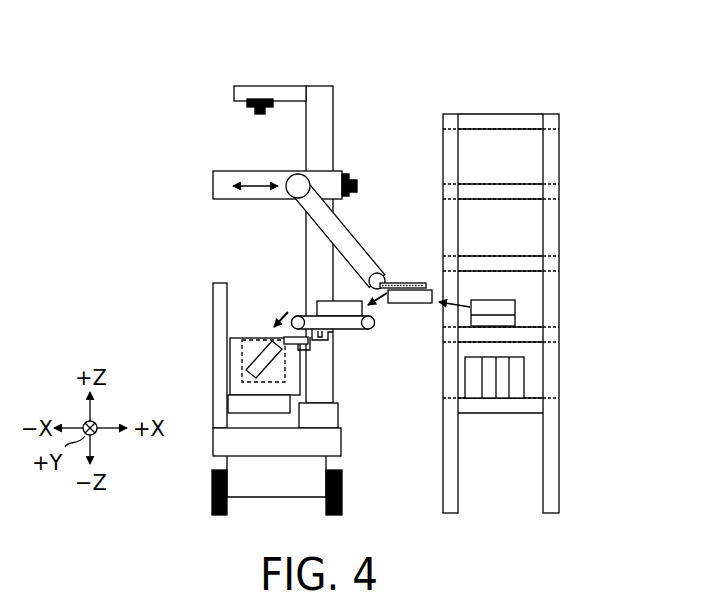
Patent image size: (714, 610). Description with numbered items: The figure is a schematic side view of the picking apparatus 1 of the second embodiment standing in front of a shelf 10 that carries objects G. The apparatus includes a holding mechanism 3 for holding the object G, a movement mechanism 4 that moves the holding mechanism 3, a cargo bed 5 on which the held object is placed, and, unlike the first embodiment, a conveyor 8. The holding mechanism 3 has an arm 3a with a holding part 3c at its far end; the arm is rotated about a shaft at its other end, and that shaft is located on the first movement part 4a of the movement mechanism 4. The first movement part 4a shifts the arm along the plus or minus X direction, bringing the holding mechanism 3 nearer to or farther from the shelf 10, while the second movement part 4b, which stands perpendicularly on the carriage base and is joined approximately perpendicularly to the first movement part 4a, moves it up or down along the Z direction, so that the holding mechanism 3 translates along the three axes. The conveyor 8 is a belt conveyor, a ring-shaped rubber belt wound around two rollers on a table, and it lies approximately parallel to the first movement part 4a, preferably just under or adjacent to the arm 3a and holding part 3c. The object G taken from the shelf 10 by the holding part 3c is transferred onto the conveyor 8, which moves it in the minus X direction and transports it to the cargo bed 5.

The picking apparatus 1 is at (355, 72).
The holding mechanism 3 is at (384, 223).
The arm 3a is at (346, 229).
The holding part 3c is at (390, 283).
The movement mechanism 4 is at (229, 147).
The first movement part 4a is at (225, 175).
The second movement part 4b is at (315, 267).
The cargo bed 5 is at (241, 312).
The conveyor 8 is at (338, 325).
The shelf 10 is at (560, 117).
The object G is at (523, 376).